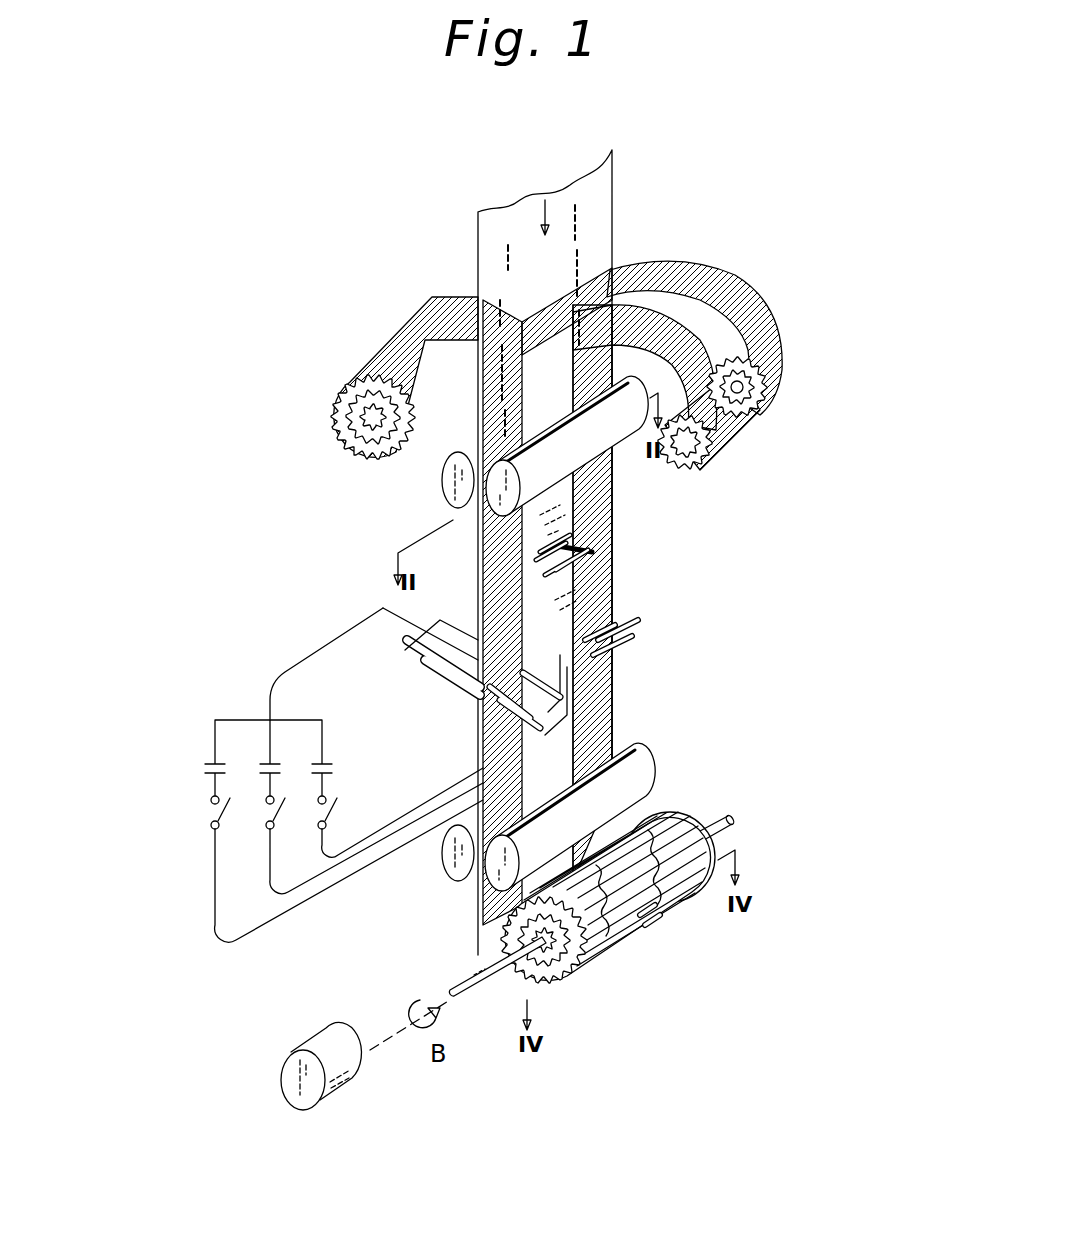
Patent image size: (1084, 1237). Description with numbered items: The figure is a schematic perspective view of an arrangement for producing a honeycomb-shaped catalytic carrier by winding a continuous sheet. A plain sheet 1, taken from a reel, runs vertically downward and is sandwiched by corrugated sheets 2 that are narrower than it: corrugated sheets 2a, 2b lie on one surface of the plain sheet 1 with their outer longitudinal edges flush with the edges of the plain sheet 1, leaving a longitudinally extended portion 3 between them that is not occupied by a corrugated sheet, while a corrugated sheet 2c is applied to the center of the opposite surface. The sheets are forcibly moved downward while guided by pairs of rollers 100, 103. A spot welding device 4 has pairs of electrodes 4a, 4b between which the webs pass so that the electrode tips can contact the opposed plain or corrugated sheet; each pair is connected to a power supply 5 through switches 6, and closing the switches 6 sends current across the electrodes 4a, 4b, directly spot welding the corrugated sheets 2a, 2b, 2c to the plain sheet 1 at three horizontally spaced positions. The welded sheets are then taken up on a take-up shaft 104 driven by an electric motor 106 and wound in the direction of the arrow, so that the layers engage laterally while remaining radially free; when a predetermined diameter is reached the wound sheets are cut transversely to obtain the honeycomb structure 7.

The plain sheet 1 is at (605, 203).
The corrugated sheets 2 is at (662, 565).
The corrugated sheet 2a is at (745, 292).
The corrugated sheet 2b is at (790, 335).
The corrugated sheet 2c is at (402, 322).
The longitudinally extended portion 3 is at (560, 662).
The spot welding device 4 is at (645, 625).
The electrode 4a is at (505, 720).
The electrode 4b is at (448, 668).
The power supply 5 is at (200, 768).
The switches 6 is at (210, 822).
The honeycomb structure 7 is at (640, 960).
The rollers 100 is at (458, 508).
The rollers 103 is at (470, 882).
The take-up shaft 104 is at (468, 997).
The electric motor 106 is at (340, 1090).